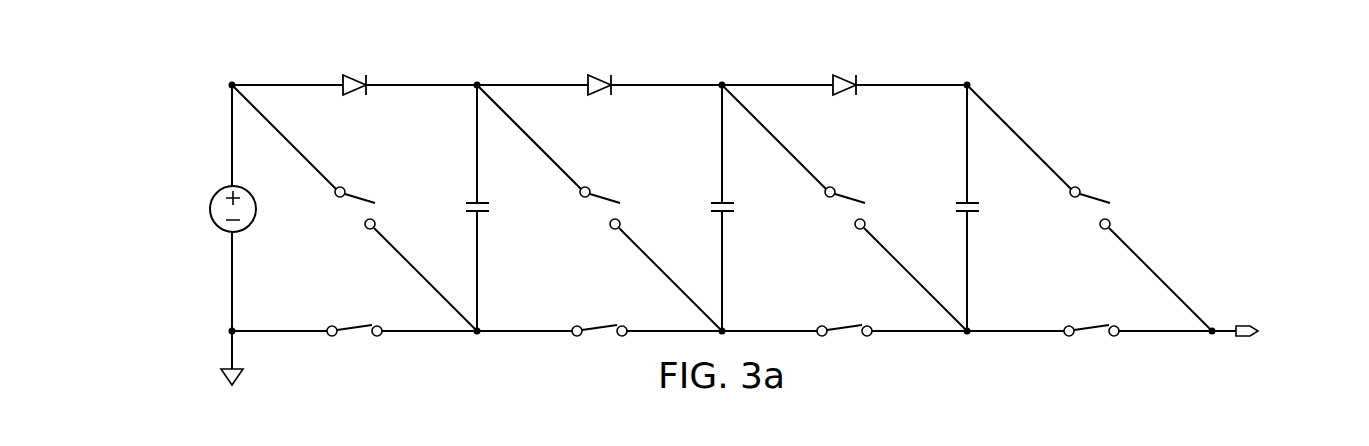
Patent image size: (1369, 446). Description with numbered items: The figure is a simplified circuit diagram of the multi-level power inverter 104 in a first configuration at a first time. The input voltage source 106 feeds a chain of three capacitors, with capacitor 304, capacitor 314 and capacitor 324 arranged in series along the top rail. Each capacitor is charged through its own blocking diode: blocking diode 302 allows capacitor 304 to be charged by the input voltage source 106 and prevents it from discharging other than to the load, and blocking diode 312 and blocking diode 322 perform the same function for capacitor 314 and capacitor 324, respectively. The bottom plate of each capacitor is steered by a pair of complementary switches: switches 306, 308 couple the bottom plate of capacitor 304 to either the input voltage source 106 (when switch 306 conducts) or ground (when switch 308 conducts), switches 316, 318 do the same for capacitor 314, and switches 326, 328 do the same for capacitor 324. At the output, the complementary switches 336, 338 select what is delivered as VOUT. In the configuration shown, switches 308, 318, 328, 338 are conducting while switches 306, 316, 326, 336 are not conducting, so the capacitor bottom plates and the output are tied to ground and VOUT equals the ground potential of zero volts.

The power inverter 104 is at (160, 106).
The input voltage source 106 is at (221, 228).
The blocking diode 302 is at (360, 74).
The capacitor 304 is at (490, 208).
The switch 306 is at (358, 197).
The switch 308 is at (357, 326).
The blocking diode 312 is at (605, 74).
The capacitor 314 is at (735, 208).
The switch 316 is at (603, 197).
The switch 318 is at (602, 326).
The blocking diode 322 is at (850, 74).
The capacitor 324 is at (980, 208).
The switch 326 is at (848, 197).
The switch 328 is at (847, 326).
The switch 336 is at (1093, 197).
The switch 338 is at (1094, 326).